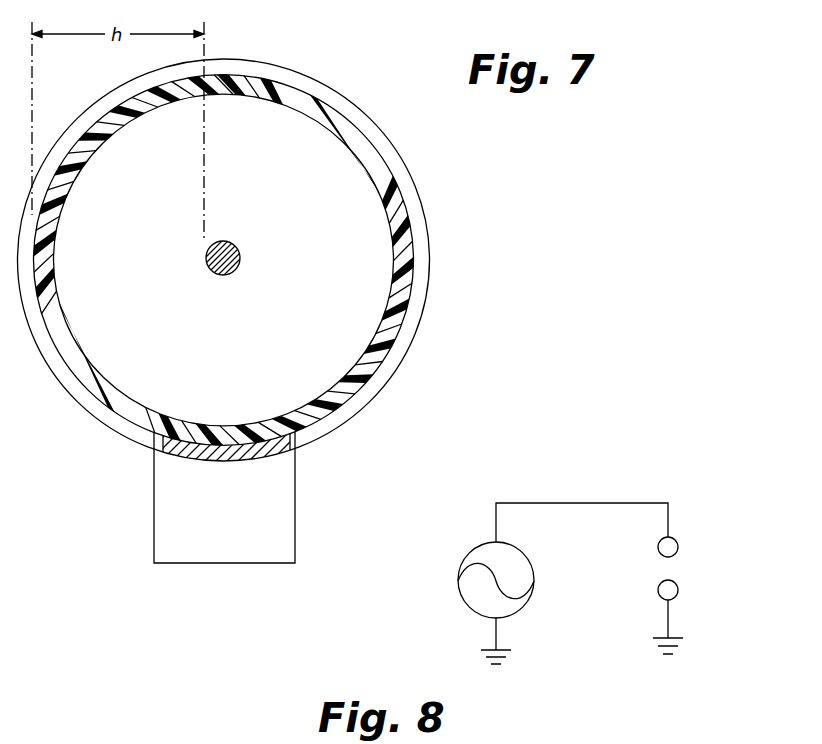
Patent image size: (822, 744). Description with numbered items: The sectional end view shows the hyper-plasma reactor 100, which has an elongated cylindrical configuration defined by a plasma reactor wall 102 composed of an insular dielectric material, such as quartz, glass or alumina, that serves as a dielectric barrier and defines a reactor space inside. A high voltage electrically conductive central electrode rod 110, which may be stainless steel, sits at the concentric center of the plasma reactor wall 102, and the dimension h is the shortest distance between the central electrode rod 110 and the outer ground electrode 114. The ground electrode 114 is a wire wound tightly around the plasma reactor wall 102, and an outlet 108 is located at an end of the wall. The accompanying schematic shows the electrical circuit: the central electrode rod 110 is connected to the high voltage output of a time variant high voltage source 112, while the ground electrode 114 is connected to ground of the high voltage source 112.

In FIG. 7, the hyper-plasma reactor 100 is at (447, 245).
In FIG. 7, the plasma reactor wall 102 is at (400, 178).
In FIG. 7, the outlet 108 is at (154, 532).
In FIG. 7, the central electrode rod 110 is at (217, 273).
In FIG. 8, the central electrode rod 110 is at (683, 542).
In FIG. 8, the time variant high voltage source 112 is at (467, 566).
In FIG. 7, the ground electrode 114 is at (413, 347).
In FIG. 8, the ground electrode 114 is at (685, 596).